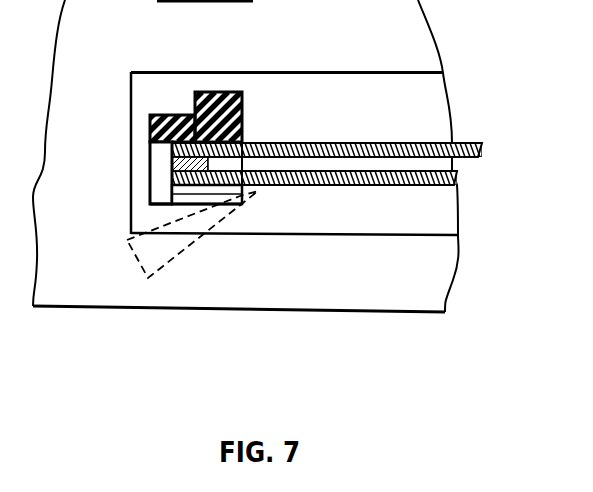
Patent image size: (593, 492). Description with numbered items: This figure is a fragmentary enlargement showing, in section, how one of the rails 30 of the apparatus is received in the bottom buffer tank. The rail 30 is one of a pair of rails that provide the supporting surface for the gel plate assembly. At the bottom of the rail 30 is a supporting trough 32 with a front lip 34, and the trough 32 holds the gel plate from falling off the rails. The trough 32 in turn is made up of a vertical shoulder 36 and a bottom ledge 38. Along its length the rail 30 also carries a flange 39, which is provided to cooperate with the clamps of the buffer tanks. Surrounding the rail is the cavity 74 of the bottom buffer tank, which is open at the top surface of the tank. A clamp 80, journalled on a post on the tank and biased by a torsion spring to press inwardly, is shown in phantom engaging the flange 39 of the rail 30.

The rail 30 is at (224, 88).
The supporting trough 32 is at (273, 139).
The front lip 34 is at (201, 200).
The vertical shoulder 36 is at (158, 183).
The bottom ledge 38 is at (243, 170).
The flange 39 is at (162, 118).
The cavity 74 is at (406, 98).
The clamp 80 is at (182, 267).